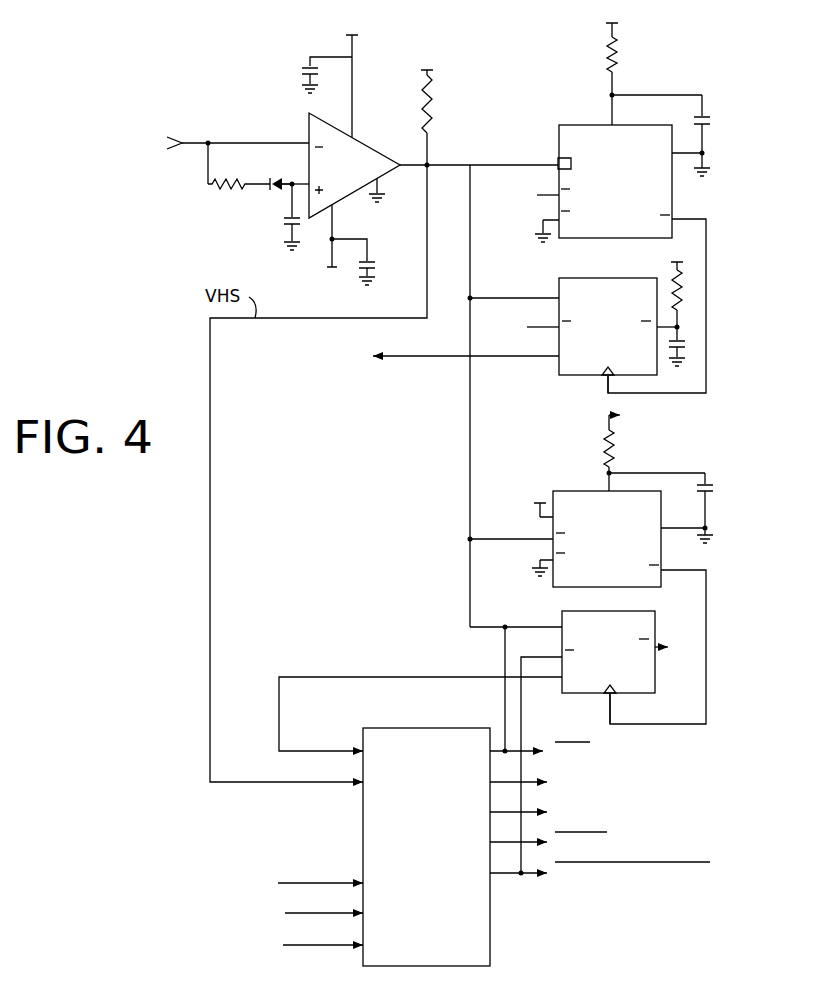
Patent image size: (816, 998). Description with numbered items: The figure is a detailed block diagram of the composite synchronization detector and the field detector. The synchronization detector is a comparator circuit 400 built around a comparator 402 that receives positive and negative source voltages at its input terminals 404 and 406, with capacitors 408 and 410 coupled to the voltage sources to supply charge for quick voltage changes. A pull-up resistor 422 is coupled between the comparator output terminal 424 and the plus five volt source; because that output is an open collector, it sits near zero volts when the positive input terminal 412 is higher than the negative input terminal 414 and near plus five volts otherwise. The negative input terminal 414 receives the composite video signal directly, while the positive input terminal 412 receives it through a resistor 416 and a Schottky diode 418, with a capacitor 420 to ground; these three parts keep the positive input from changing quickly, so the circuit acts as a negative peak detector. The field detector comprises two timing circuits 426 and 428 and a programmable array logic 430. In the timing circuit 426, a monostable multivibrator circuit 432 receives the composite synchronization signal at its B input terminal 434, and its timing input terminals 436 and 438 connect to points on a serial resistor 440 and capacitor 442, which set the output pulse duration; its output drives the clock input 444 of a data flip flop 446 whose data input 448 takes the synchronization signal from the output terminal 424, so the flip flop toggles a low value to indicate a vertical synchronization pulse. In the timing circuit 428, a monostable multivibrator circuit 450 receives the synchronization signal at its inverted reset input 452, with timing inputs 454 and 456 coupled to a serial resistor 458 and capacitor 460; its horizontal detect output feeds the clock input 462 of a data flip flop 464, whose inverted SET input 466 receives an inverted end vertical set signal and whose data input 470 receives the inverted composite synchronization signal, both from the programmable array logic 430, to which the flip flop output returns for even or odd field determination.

The comparator circuit 400 is at (241, 76).
The comparator 402 is at (369, 147).
The positive source voltage input terminal 404 is at (354, 136).
The negative source voltage input terminal 406 is at (336, 209).
The capacitor 408 is at (308, 66).
The capacitor 410 is at (375, 274).
The positive input terminal 412 is at (307, 180).
The negative input terminal 414 is at (307, 140).
The resistor 416 is at (222, 190).
The Schottky diode 418 is at (268, 190).
The capacitor 420 is at (288, 228).
The pull-up resistor 422 is at (432, 111).
The output terminal 424 is at (404, 168).
The timing circuit 426 is at (542, 62).
The timing circuit 428 is at (542, 470).
The programmable array logic (PAL) 430 is at (491, 954).
The monostable multivibrator circuit 432 is at (580, 125).
The B input terminal 434 is at (558, 163).
The timing input terminal 436 is at (620, 125).
The timing input terminal 438 is at (672, 157).
The resistor 440 is at (618, 55).
The capacitor 442 is at (705, 114).
The clock input 444 is at (608, 375).
The data flip flop 446 is at (615, 277).
The data input 448 is at (557, 297).
The monostable multivibrator circuit 450 is at (660, 586).
The inverted reset input 452 is at (553, 528).
The timing input 454 is at (607, 490).
The timing input 456 is at (660, 528).
The resistor 458 is at (612, 458).
The capacitor 460 is at (707, 483).
The clock input 462 is at (612, 694).
The data flip flop 464 is at (590, 695).
The inverted SET input 466 is at (562, 654).
The data input 470 is at (562, 623).